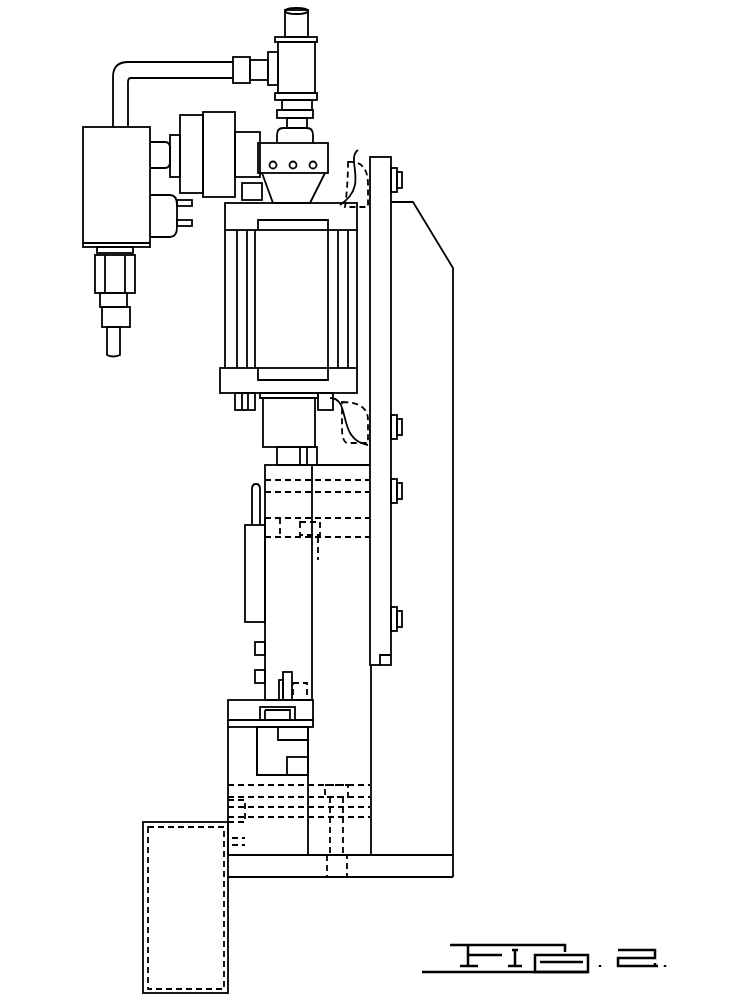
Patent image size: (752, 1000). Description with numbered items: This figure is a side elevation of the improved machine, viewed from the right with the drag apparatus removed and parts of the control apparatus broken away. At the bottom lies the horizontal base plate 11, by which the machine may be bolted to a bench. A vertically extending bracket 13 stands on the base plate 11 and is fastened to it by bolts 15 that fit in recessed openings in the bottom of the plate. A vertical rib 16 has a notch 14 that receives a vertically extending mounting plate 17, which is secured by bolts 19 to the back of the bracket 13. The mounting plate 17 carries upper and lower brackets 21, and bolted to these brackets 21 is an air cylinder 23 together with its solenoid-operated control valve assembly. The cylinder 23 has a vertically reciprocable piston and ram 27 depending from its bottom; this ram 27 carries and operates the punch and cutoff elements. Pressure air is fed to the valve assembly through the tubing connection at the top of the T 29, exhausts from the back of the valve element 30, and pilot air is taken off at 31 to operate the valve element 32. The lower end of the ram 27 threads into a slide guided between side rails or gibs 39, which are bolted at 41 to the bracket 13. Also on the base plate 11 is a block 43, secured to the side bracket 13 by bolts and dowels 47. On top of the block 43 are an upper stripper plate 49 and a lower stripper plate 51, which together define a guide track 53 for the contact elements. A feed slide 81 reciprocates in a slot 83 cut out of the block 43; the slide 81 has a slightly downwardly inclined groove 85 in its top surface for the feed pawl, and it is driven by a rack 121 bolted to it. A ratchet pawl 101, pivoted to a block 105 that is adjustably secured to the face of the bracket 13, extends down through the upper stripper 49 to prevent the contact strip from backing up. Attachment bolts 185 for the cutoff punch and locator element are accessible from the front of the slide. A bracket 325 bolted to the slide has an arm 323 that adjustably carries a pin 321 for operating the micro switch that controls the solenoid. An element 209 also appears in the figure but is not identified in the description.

The base plate 11 is at (448, 863).
The vertical bracket 13 is at (334, 751).
The notch 14 is at (392, 660).
The bolts 15 is at (343, 880).
The vertical rib 16 is at (455, 667).
The mounting plate 17 is at (380, 550).
The bolts 19 is at (403, 490).
The upper and lower brackets 21 is at (345, 409).
The air cylinder 23 is at (275, 293).
The piston and ram 27 is at (277, 456).
The T 29 is at (310, 32).
The valve element 30 is at (322, 145).
The pilot air take-off 31 is at (185, 68).
The valve element 32 is at (83, 205).
The side rails or gibs 39 is at (298, 602).
The gib bolts 41 is at (317, 520).
The block 43 is at (226, 752).
The bolts and dowels 47 is at (225, 810).
The upper stripper plate 49 is at (228, 708).
The lower stripper plate 51 is at (228, 727).
The guide track 53 is at (272, 712).
The feed slide 81 is at (298, 748).
The slot 83 is at (262, 762).
The groove 85 is at (300, 732).
The ratchet pawl 101 is at (288, 672).
The block 105 is at (300, 685).
The rack 121 is at (302, 768).
The attachment bolts 185 is at (255, 646).
The receptacle 209 is at (143, 920).
The pin 321 is at (250, 510).
The arm 323 is at (225, 105).
The bracket 325 is at (244, 560).